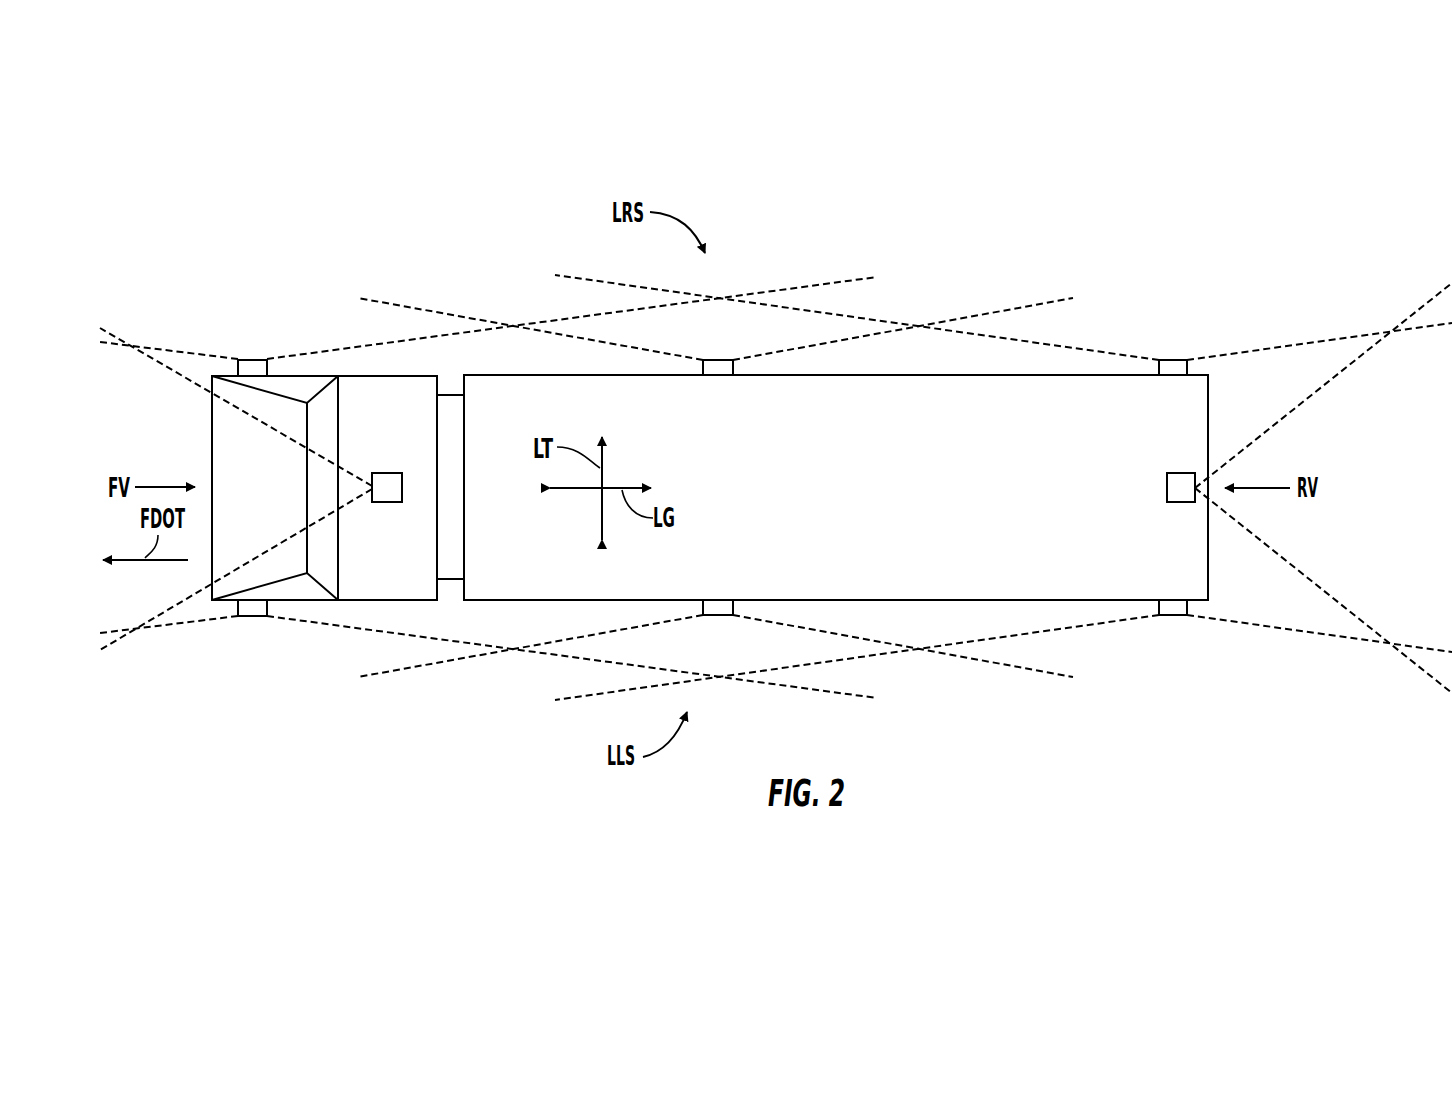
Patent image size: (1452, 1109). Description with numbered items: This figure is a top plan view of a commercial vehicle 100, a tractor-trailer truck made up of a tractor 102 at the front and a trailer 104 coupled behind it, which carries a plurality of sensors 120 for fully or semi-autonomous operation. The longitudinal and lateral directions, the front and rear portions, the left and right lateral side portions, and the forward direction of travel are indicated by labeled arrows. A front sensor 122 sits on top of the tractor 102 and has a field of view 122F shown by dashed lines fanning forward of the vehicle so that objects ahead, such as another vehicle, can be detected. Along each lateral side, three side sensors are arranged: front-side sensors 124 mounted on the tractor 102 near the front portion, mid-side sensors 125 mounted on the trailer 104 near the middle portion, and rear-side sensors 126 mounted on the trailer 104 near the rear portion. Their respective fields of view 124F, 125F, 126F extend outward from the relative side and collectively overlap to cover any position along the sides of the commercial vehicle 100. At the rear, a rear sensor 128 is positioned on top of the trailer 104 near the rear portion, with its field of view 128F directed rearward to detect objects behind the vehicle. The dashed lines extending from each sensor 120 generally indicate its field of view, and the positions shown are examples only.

The commercial vehicle 100 is at (238, 262).
The tractor 102 is at (233, 465).
The trailer 104 is at (930, 405).
The sensors 120 is at (238, 368).
The front sensor 122 is at (387, 478).
The field of view of the front sensor 122F is at (182, 378).
The front-side sensors 124 is at (250, 362).
The field of view of the front-side sensors 124F is at (335, 345).
The mid-side sensors 125 is at (718, 370).
The field of view of the mid-side sensors 125F is at (983, 313).
The rear-side sensors 126 is at (1173, 370).
The field of view of the rear-side sensors 126F is at (1115, 352).
The rear sensor 128 is at (1183, 495).
The field of view of the rear sensor 128F is at (1337, 375).